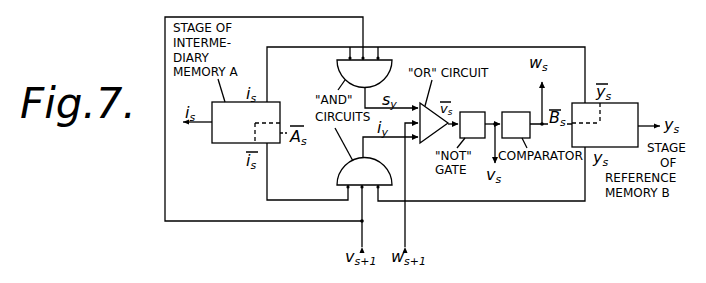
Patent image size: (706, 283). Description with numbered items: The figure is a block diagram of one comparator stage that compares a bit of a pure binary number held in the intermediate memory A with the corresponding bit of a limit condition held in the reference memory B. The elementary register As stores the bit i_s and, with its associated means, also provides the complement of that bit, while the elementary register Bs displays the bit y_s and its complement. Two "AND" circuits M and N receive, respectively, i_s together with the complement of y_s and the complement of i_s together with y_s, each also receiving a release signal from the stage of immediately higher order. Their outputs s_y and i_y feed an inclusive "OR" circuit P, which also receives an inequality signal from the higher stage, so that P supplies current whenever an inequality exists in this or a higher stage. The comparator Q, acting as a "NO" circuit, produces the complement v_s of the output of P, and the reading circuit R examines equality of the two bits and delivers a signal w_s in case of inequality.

The elementary register of intermediate memory A As is at (235, 111).
The "AND" circuit M is at (377, 84).
The "AND" circuit N is at (377, 161).
The inclusive "OR" circuit P is at (439, 123).
The comparator Q is at (478, 130).
The reading circuit R is at (537, 130).
The elementary register of reference memory B Bs is at (616, 125).